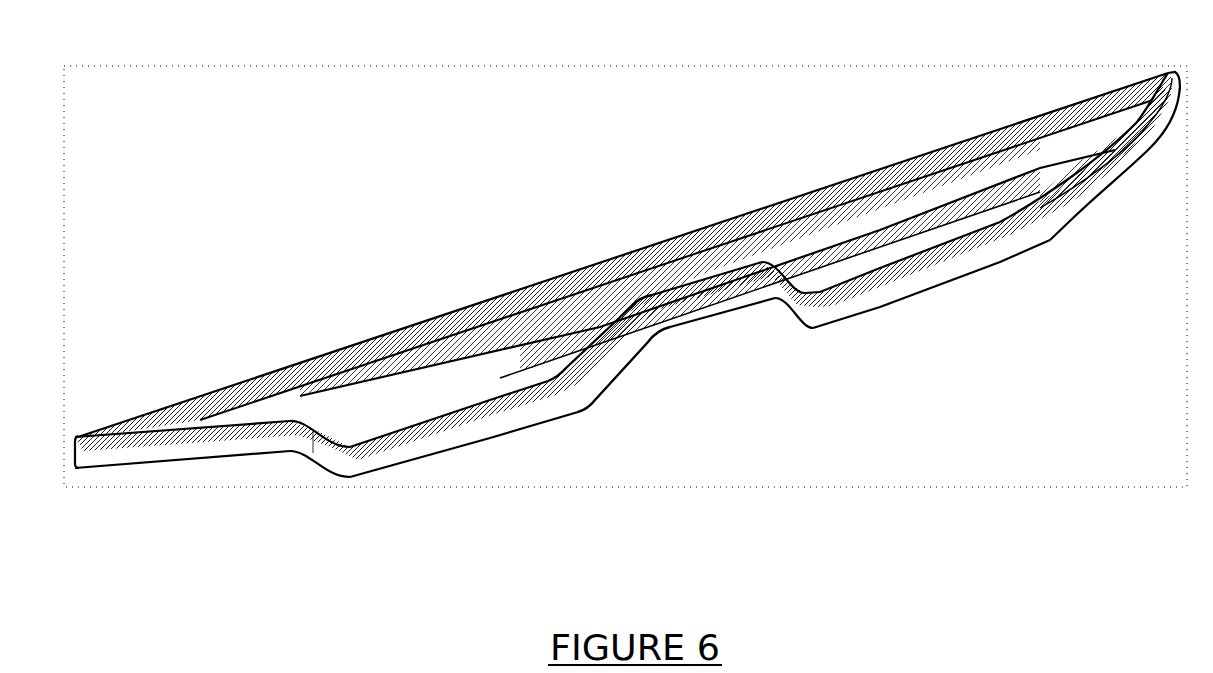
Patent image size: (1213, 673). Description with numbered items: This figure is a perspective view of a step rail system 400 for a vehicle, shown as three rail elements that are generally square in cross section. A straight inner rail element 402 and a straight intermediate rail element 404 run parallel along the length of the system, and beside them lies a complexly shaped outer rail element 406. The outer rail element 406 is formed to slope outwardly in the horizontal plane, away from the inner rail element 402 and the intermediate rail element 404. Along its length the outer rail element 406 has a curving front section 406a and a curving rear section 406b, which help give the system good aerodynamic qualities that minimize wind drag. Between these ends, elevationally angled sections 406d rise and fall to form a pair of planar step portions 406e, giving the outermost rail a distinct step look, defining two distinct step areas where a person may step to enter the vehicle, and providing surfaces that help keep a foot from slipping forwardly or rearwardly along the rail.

The step rail system 400 is at (874, 80).
The inner rail element 402 is at (333, 367).
The intermediate rail element 404 is at (543, 327).
The outer rail element 406 is at (631, 316).
The curving front section 406a is at (167, 453).
The curving rear section 406b is at (1158, 138).
The elevationally angled sections 406d is at (330, 455).
The planar step portions 406e is at (462, 433).